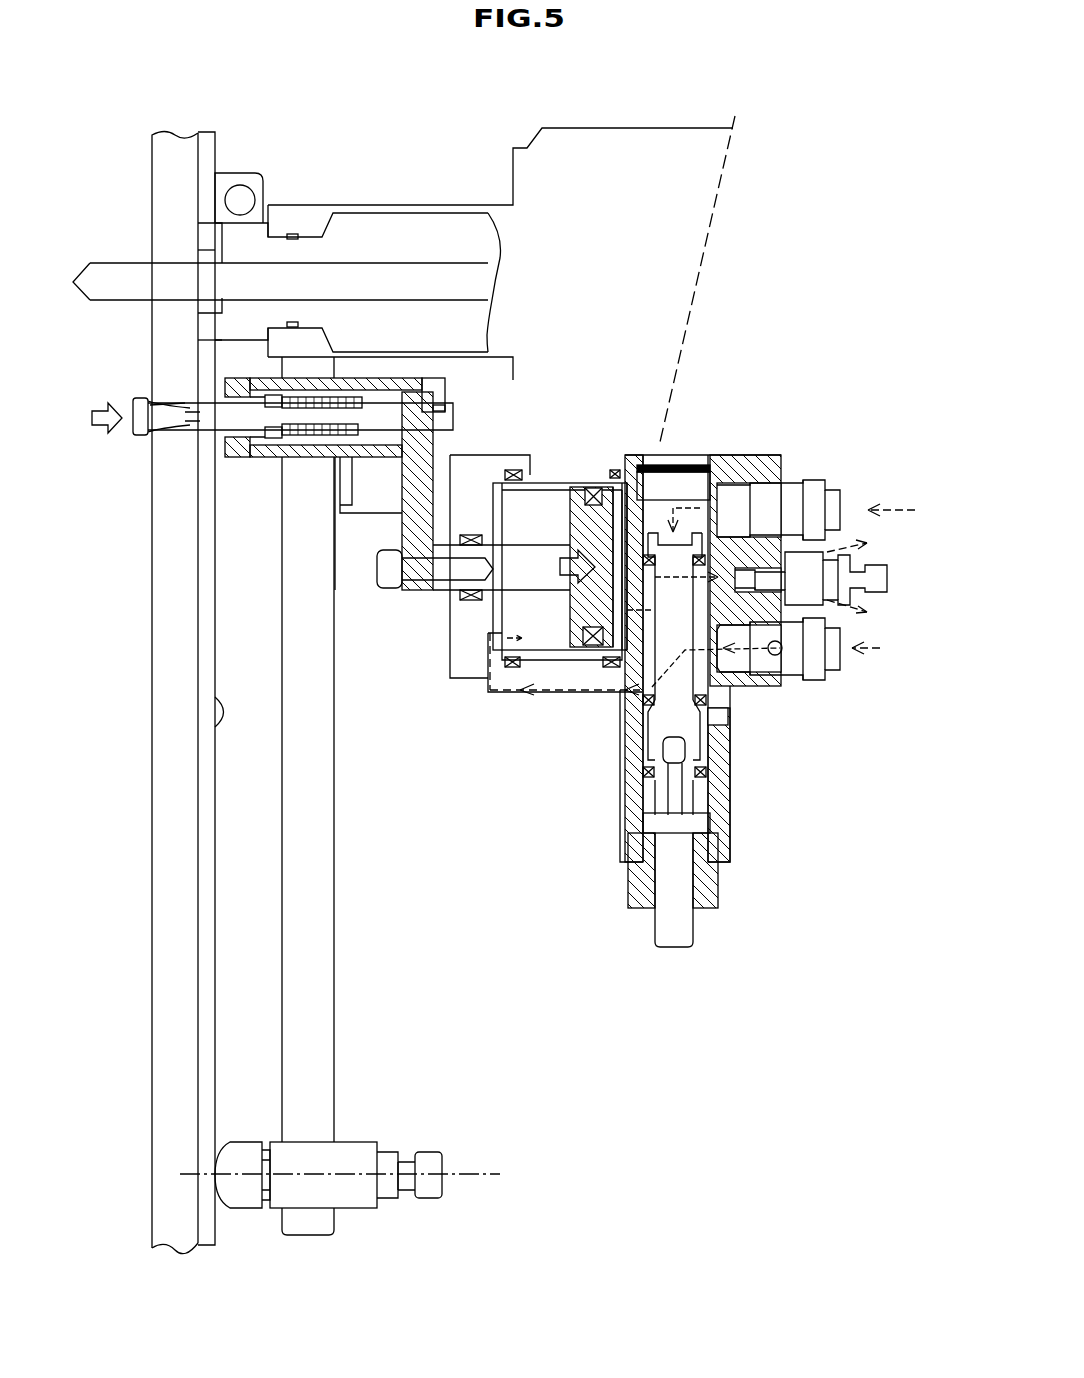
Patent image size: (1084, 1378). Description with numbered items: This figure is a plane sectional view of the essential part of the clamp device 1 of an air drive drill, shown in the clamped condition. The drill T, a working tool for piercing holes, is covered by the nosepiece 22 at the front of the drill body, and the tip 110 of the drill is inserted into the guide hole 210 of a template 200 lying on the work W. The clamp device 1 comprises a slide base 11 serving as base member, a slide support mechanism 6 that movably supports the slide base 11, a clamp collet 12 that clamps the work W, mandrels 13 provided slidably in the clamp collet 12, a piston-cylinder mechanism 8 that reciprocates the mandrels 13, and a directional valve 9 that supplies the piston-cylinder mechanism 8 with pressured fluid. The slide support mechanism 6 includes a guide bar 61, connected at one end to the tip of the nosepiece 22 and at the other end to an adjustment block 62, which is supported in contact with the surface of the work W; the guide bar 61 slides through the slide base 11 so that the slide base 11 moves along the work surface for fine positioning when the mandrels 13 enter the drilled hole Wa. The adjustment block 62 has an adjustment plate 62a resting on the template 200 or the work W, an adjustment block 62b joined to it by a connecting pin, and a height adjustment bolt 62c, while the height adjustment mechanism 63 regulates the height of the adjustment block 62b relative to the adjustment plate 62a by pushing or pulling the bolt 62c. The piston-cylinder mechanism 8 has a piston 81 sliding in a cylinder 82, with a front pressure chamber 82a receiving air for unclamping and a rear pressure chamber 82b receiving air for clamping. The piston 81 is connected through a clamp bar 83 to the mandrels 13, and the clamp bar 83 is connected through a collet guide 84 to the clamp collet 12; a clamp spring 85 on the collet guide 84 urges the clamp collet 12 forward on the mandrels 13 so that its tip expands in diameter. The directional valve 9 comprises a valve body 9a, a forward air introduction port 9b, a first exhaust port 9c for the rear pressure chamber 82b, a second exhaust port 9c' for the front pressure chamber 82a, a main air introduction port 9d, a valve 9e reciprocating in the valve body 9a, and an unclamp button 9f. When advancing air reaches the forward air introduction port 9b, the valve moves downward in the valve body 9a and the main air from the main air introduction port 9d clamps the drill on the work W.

The clamp device 1 is at (753, 742).
The slide support mechanism 6 is at (356, 749).
The piston-cylinder mechanism 8 is at (430, 612).
The directional valve 9 is at (753, 698).
The valve body 9a is at (745, 455).
The forward air introduction port 9b is at (818, 480).
The first exhaust port 9c is at (833, 576).
The second exhaust port 9c' is at (740, 754).
The main air introduction port 9d is at (815, 673).
The valve 9e is at (670, 720).
The unclamp button 9f is at (678, 950).
The slide base 11 is at (262, 457).
The clamp collet 12 is at (173, 397).
The mandrels 13 is at (190, 420).
The nosepiece 22 is at (707, 128).
The guide bar 61 is at (335, 1046).
The adjustment block 62 is at (340, 1196).
The adjustment plate 62a is at (243, 1208).
The adjustment block 62b is at (357, 1140).
The height adjustment bolt 62c is at (430, 1150).
The height adjustment mechanism 63 is at (430, 1213).
The piston 81 is at (633, 455).
The cylinder 82 is at (580, 470).
The front pressure chamber 82a is at (547, 637).
The rear pressure chamber 82b is at (617, 622).
The clamp bar 83 is at (402, 530).
The collet guide 84 is at (372, 440).
The clamp spring 85 is at (310, 440).
The tip 110 is at (204, 243).
The template 200 is at (215, 727).
The guide hole 210 is at (198, 323).
The drill T is at (115, 268).
The work W is at (152, 590).
The drilled hole Wa is at (170, 437).